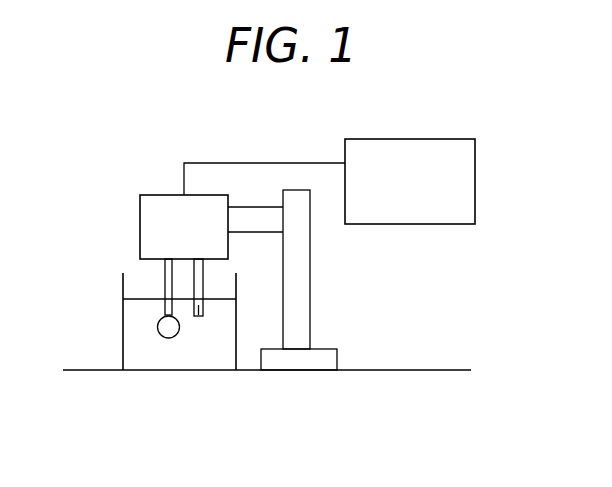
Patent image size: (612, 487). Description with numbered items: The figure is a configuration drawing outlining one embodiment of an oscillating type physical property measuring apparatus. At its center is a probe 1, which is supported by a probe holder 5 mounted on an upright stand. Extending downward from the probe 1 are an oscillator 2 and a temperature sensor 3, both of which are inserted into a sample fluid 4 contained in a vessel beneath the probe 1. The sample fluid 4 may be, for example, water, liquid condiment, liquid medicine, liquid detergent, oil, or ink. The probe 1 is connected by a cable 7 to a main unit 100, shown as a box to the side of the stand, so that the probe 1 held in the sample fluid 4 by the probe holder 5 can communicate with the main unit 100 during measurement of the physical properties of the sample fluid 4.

The probe 1 is at (184, 255).
The oscillator 2 is at (157, 329).
The temperature sensor 3 is at (199, 317).
The sample fluid 4 is at (168, 357).
The probe holder 5 is at (242, 234).
The cable 7 is at (264, 165).
The main unit 100 is at (410, 181).